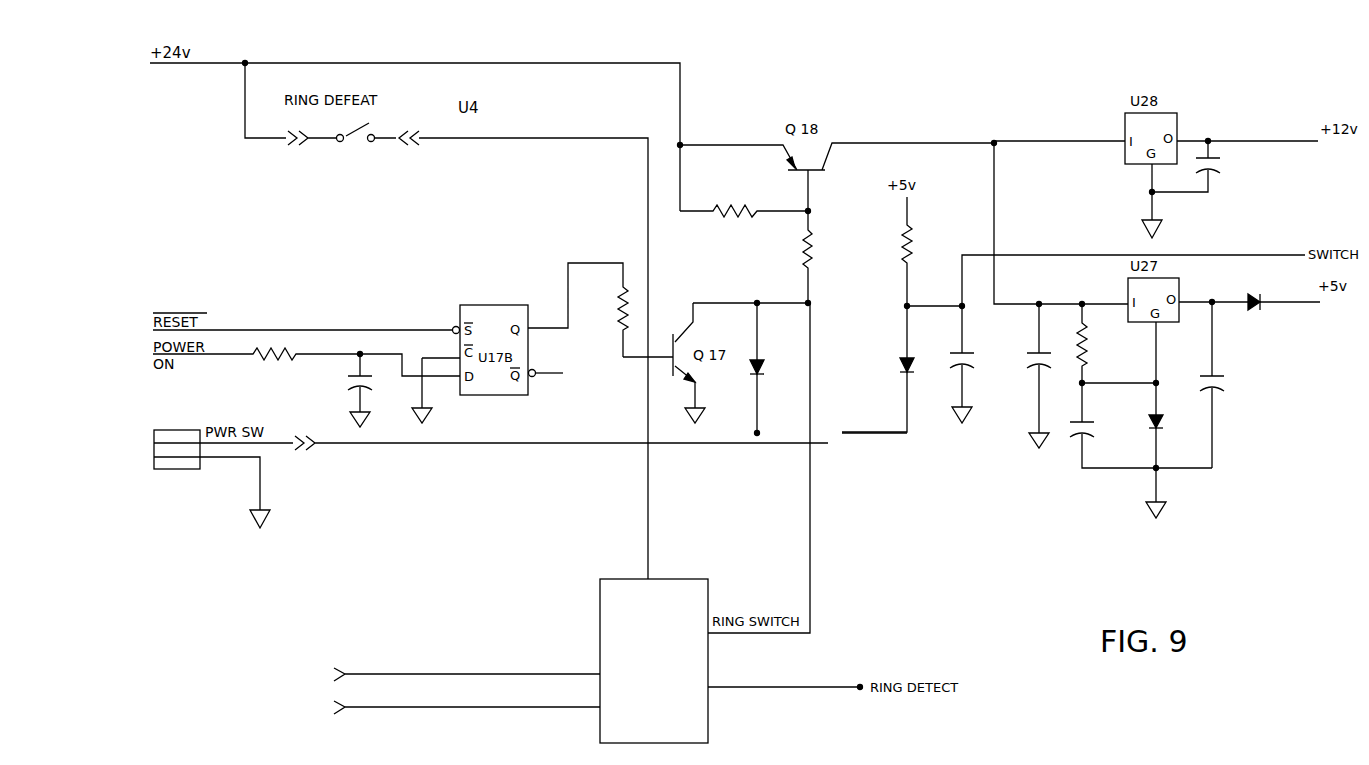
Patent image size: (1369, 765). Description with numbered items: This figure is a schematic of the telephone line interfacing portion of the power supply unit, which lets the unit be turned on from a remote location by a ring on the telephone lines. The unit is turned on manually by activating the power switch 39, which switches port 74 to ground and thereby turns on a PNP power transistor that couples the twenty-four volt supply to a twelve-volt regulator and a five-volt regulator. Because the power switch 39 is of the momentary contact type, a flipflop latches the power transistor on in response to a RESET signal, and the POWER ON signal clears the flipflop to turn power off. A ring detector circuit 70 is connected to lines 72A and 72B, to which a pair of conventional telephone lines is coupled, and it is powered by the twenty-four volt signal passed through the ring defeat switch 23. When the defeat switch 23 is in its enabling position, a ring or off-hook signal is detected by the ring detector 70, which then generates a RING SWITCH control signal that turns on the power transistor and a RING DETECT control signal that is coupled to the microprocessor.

The line 72A is at (303, 141).
The line 72B is at (412, 143).
The ring defeat switch 23 is at (352, 142).
The power switch 39 is at (158, 430).
The port 74 is at (303, 452).
The ring detector circuit 70 is at (668, 579).